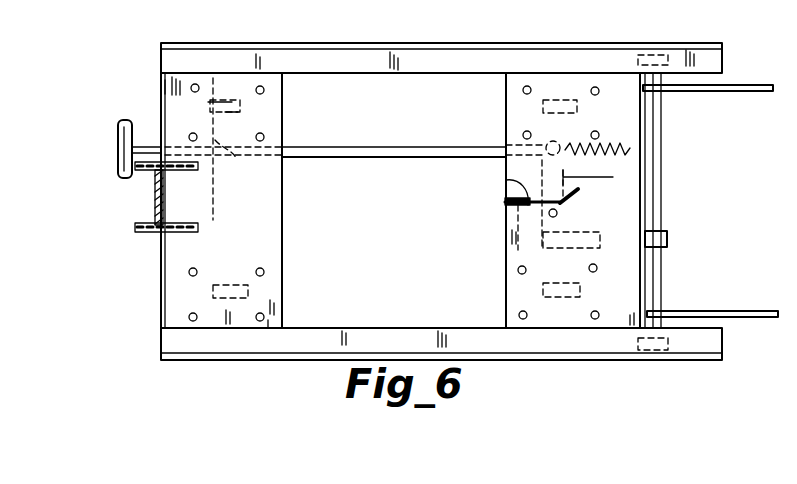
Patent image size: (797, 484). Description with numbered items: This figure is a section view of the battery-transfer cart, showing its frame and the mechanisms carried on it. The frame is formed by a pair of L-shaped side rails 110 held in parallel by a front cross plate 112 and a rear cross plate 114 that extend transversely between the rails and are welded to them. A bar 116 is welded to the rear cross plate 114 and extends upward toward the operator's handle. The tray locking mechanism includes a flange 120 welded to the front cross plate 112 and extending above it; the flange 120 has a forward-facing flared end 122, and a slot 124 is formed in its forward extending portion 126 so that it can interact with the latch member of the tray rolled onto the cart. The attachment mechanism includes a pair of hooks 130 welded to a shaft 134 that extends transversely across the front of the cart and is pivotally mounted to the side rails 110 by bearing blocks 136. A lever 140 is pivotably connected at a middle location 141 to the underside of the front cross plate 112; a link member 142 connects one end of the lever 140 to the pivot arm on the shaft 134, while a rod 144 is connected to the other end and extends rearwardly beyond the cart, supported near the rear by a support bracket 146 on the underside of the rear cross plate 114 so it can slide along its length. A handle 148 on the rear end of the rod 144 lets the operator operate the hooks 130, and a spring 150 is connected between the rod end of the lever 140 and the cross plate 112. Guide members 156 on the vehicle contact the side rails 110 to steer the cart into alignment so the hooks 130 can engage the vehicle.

The side rails 110 is at (490, 66).
The front cross plate 112 is at (620, 314).
The rear cross plate 114 is at (188, 305).
The bar 116 is at (153, 200).
The flange 120 is at (506, 180).
The flared end 122 is at (560, 205).
The slot 124 is at (575, 196).
The forward extending portion 126 is at (510, 204).
The hooks 130 is at (748, 84).
The shaft 134 is at (656, 223).
The bearing blocks 136 is at (666, 352).
The lever 140 is at (660, 176).
The middle location 141 is at (525, 248).
The link member 142 is at (563, 317).
The rod 144 is at (382, 148).
The support bracket 146 is at (234, 165).
The handle 148 is at (122, 118).
The spring 150 is at (610, 148).
The guide members 156 is at (796, 358).